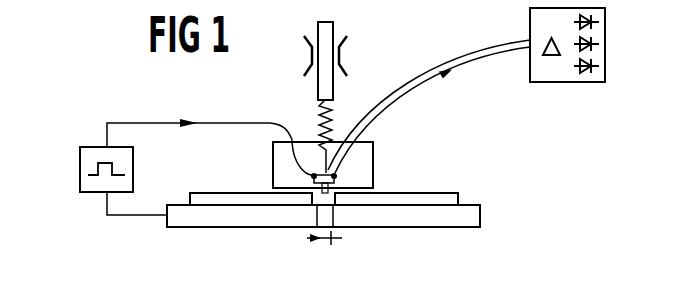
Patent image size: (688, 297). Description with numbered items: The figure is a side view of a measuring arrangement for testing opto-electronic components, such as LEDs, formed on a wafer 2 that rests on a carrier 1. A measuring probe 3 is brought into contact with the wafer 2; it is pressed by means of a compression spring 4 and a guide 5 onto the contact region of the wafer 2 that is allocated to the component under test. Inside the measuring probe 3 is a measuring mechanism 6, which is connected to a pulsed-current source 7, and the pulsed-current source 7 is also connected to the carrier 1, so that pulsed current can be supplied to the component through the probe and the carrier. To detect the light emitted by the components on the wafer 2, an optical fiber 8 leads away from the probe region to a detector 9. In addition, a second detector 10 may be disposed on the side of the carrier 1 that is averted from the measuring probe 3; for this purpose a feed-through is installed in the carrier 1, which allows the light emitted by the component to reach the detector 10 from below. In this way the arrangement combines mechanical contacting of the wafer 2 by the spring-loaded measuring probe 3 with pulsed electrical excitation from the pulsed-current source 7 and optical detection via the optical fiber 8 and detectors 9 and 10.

The carrier 1 is at (480, 213).
The wafer 2 is at (447, 192).
The measuring probe 3 is at (282, 172).
The compression spring 4 is at (318, 112).
The guide 5 is at (333, 87).
The measuring mechanism 6 is at (340, 179).
The pulsed-current source 7 is at (93, 147).
The optical fiber 8 is at (441, 60).
The detector 9 is at (559, 82).
The detector 10 is at (307, 238).